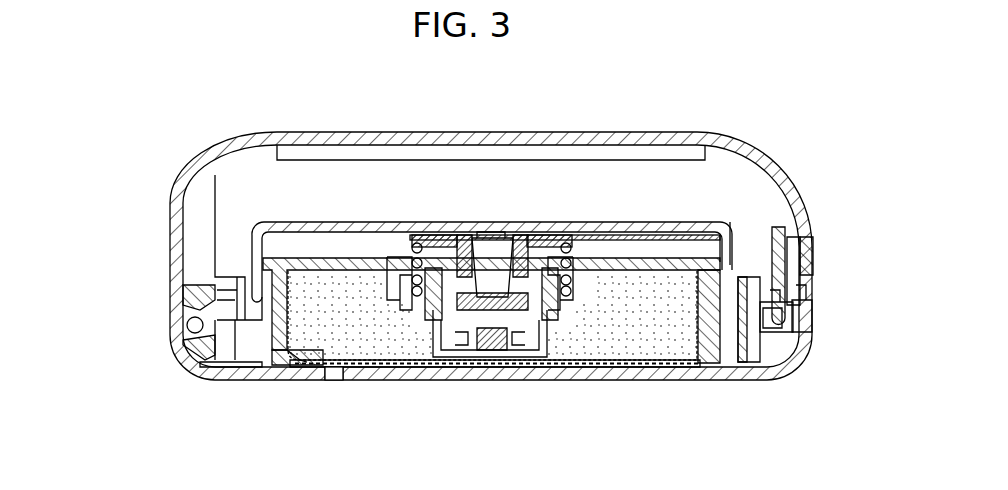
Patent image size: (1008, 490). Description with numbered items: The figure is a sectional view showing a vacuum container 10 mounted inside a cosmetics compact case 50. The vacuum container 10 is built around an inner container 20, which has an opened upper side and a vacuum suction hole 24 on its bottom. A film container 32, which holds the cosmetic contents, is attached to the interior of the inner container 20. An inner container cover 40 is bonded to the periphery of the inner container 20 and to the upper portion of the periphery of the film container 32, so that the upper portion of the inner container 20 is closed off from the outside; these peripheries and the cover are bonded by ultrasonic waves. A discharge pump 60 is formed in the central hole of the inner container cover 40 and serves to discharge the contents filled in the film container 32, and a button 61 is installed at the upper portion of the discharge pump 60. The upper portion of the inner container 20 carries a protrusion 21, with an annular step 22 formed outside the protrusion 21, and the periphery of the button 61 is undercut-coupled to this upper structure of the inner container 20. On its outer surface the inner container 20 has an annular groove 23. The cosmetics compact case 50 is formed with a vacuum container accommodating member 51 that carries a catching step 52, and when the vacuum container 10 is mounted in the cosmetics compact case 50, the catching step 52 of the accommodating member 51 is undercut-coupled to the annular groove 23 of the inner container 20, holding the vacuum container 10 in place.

The vacuum container 10 is at (284, 260).
The inner container 20 is at (793, 272).
The protrusion 21 is at (760, 250).
The annular step 22 is at (752, 275).
The annular groove 23 is at (268, 362).
The vacuum suction hole 24 is at (333, 368).
The film container 32 is at (380, 363).
The inner container cover 40 is at (337, 259).
The cosmetics compact case 50 is at (255, 123).
The vacuum container accommodating member 51 is at (267, 312).
The catching step 52 is at (267, 350).
The discharge pump 60 is at (653, 220).
The button 61 is at (731, 255).